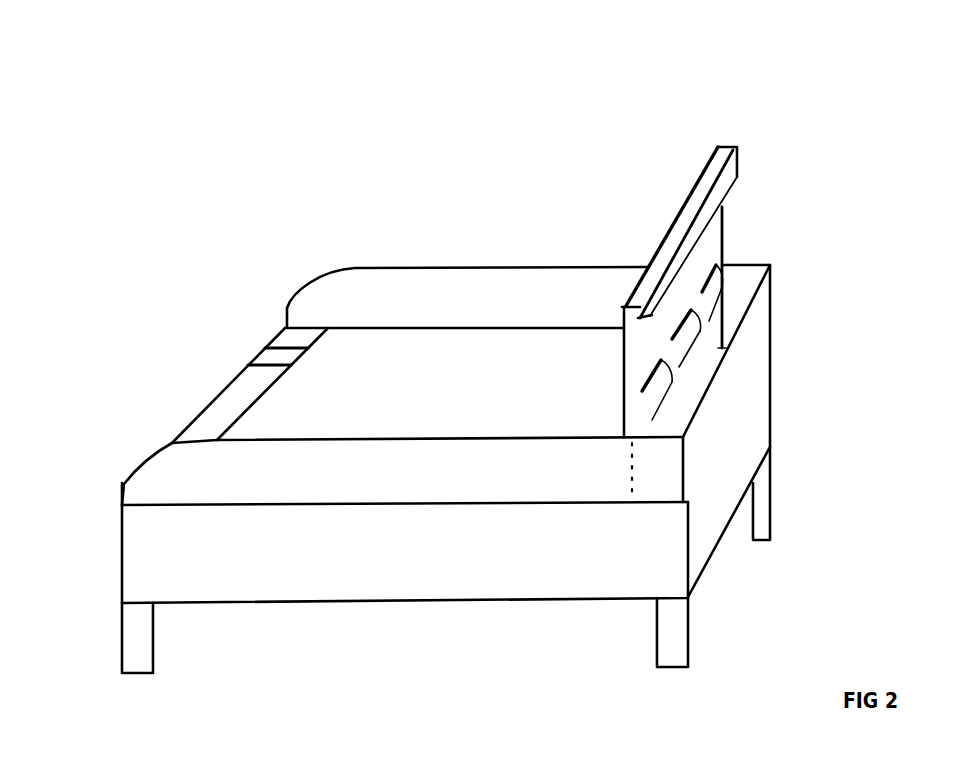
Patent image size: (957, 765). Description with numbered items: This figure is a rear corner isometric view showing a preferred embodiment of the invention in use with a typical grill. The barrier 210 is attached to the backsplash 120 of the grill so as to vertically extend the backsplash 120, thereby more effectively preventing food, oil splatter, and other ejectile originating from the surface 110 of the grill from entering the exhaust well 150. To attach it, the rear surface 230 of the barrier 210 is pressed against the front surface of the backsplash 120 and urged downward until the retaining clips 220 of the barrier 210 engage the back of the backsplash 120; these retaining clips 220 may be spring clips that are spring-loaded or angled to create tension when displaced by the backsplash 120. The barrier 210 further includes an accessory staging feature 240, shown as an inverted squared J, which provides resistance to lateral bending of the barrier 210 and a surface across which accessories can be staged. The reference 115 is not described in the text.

The surface of the grill 110 is at (307, 408).
The side rail with cross straps 115 is at (270, 342).
The backsplash 120 is at (712, 337).
The exhaust well 150 is at (707, 427).
The barrier 210 is at (676, 216).
The retaining clips 220 is at (725, 287).
The rear surface of the barrier 230 is at (706, 229).
The accessory staging feature 240 is at (738, 147).